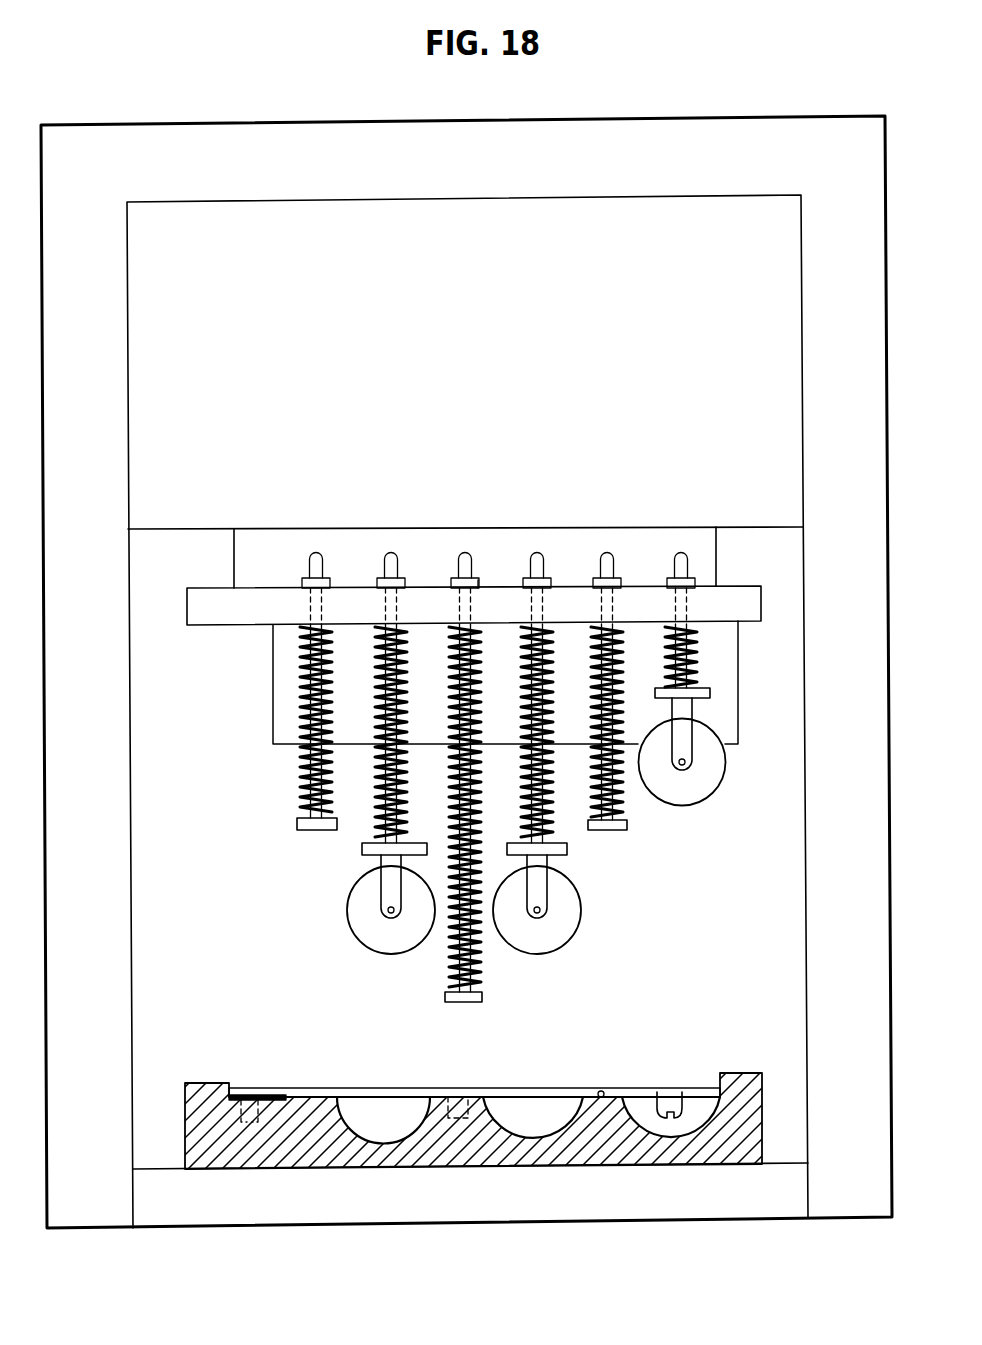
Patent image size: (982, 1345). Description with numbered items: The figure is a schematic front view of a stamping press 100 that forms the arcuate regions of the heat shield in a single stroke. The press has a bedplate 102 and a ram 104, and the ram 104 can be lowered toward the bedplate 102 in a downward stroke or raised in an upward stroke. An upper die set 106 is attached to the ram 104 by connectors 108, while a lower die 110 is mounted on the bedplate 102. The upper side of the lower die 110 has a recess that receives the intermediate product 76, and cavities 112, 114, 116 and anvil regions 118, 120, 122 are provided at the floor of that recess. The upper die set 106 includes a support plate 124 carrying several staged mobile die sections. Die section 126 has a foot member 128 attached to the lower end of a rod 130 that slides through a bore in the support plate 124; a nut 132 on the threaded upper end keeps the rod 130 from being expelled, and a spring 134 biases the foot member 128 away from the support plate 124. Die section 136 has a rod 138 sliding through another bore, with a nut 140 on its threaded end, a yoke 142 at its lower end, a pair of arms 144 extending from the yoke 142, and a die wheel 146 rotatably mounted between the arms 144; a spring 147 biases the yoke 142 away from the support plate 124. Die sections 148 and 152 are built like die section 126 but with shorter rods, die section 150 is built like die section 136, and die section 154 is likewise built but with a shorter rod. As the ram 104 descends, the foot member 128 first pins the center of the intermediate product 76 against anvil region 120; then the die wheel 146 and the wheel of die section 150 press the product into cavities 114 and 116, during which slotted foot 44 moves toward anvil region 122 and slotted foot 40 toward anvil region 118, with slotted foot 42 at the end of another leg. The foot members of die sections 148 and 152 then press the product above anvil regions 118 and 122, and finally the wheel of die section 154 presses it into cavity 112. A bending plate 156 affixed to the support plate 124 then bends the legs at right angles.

The stamping press 100 is at (205, 118).
The bedplate 102 is at (226, 1205).
The ram 104 is at (486, 285).
The upper die set 106 is at (262, 705).
The connectors 108 is at (197, 540).
The lower die 110 is at (197, 1092).
The cavity 112 is at (640, 1093).
The cavity 114 is at (517, 1092).
The cavity 116 is at (340, 1102).
The anvil region 118 is at (310, 1096).
The anvil region 120 is at (452, 1097).
The anvil region 122 is at (600, 1090).
The support plate 124 is at (228, 612).
The die section 126 is at (469, 754).
The foot member 128 is at (470, 1002).
The rod 130 is at (471, 558).
The nut 132 is at (457, 583).
The spring 134 is at (477, 962).
The die section 136 is at (567, 715).
The rod 138 is at (543, 558).
The nut 140 is at (480, 582).
The yoke 142 is at (562, 852).
The arms 144 is at (537, 893).
The die wheel 146 is at (565, 920).
The spring 147 is at (550, 822).
The die section 148 is at (315, 522).
The die section 150 is at (390, 522).
The die section 152 is at (636, 811).
The die section 154 is at (675, 517).
The bending plate 156 is at (739, 698).
The slotted foot 40 is at (245, 1097).
The slotted foot 42 is at (432, 1090).
The slotted foot 44 is at (670, 1097).
The intermediate product 76 is at (272, 1089).